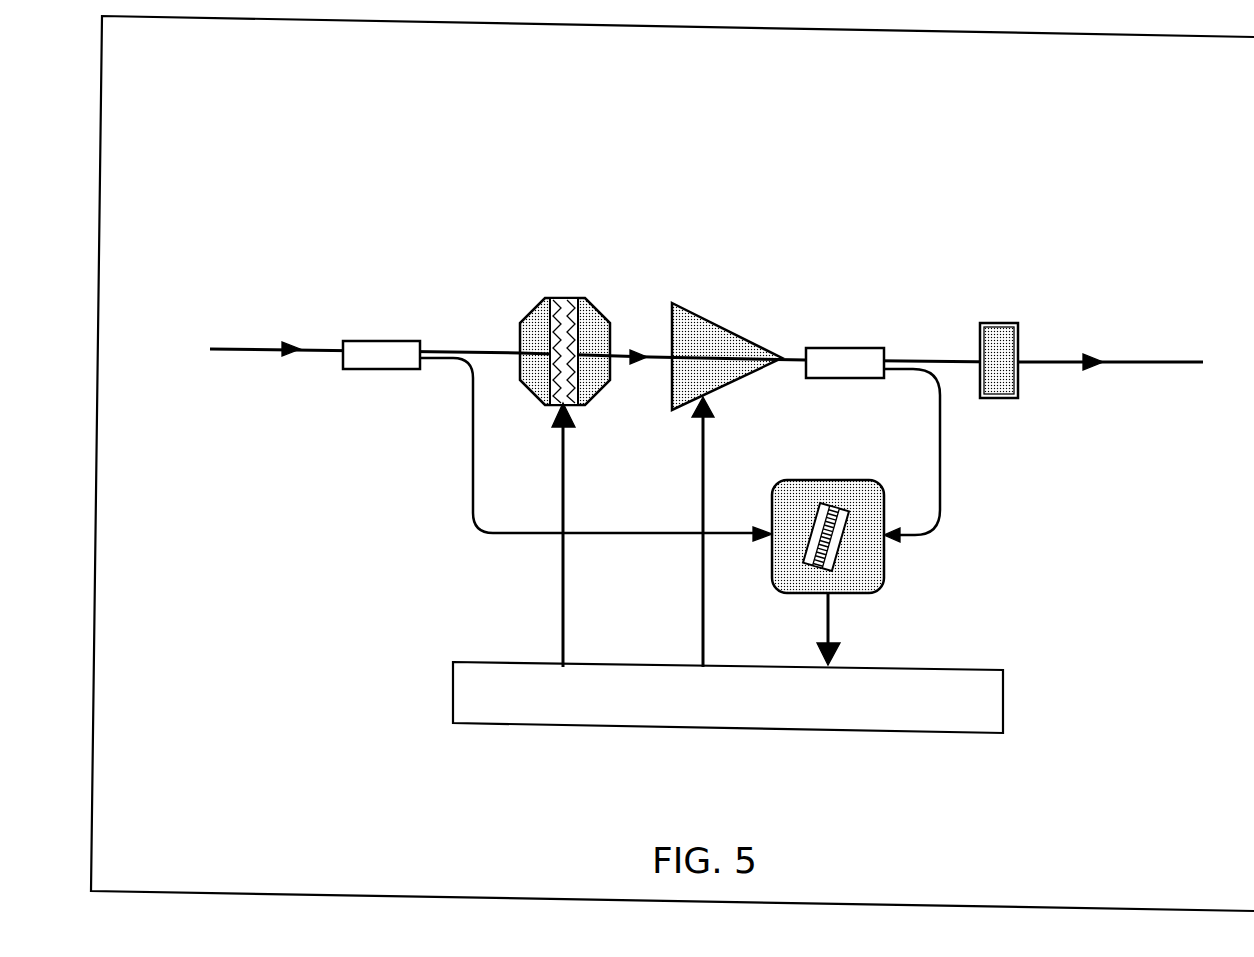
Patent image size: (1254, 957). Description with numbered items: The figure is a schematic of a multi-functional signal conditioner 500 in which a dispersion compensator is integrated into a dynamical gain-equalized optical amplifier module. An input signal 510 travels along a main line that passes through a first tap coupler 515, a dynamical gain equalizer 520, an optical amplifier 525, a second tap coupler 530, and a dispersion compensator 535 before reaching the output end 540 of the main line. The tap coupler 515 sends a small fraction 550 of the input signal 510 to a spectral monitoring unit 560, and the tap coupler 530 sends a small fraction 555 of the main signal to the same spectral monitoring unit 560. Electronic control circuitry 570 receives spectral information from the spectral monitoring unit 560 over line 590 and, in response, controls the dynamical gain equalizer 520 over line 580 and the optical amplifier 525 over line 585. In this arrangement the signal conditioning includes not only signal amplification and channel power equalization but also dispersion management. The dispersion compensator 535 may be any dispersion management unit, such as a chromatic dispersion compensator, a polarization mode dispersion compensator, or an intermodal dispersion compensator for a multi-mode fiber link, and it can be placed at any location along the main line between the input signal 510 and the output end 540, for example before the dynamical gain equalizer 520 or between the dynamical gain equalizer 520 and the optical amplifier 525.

The multi-functional signal conditioner 500 is at (740, 115).
The input signal 510 is at (294, 348).
The tap coupler 515 is at (377, 350).
The dynamical gain equalizer 520 is at (592, 337).
The optical amplifier 525 is at (737, 348).
The tap coupler 530 is at (855, 352).
The dispersion compensator 535 is at (1000, 347).
The output end of main line 540 is at (1078, 353).
The small fraction of input signal 550 is at (471, 422).
The small fraction of main signal 555 is at (940, 488).
The spectral monitoring unit 560 is at (863, 570).
The electronic control circuitry 570 is at (963, 700).
The control line 580 is at (558, 575).
The control line 585 is at (698, 597).
The control line 590 is at (832, 618).